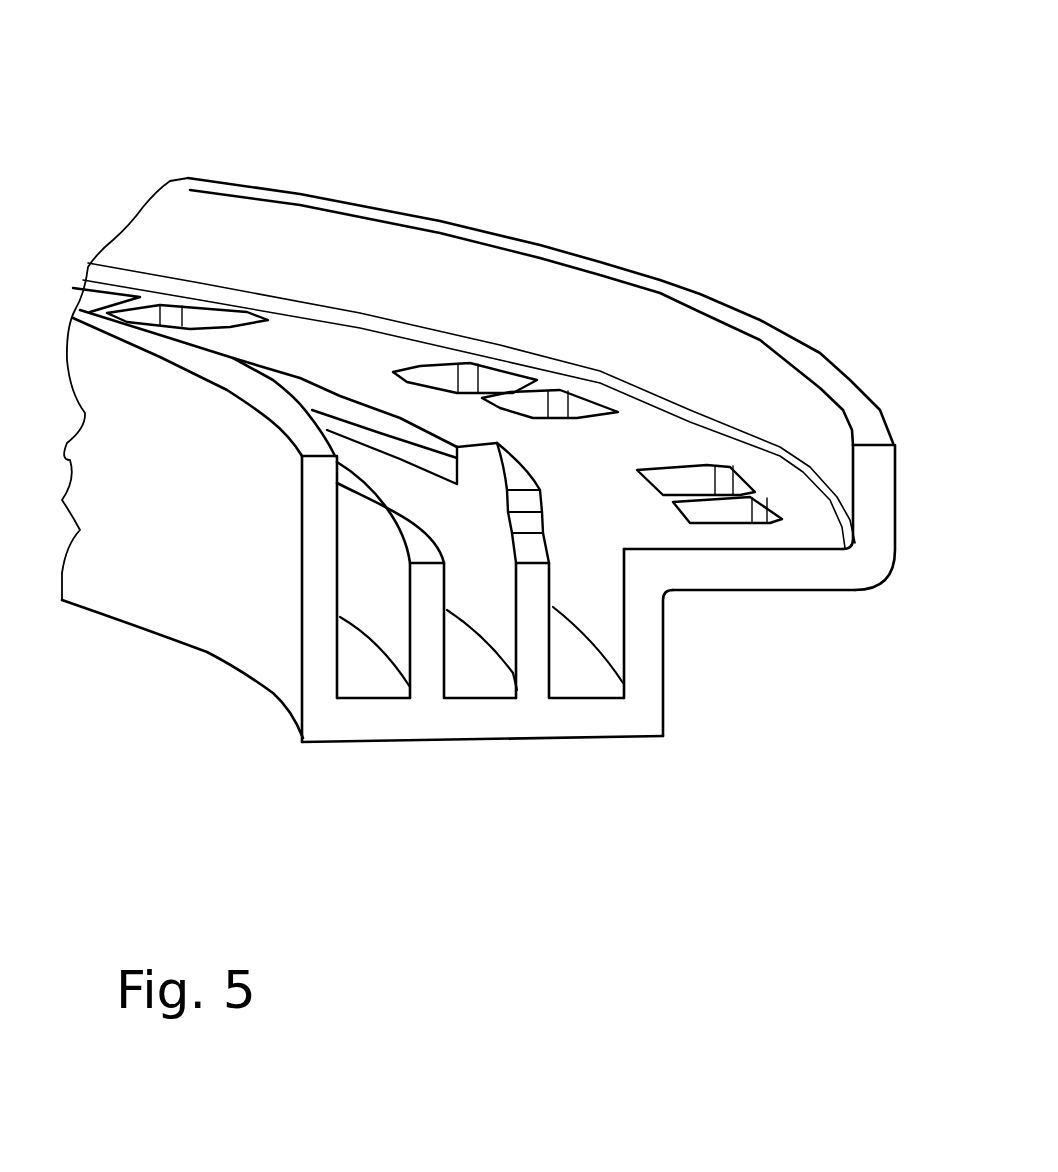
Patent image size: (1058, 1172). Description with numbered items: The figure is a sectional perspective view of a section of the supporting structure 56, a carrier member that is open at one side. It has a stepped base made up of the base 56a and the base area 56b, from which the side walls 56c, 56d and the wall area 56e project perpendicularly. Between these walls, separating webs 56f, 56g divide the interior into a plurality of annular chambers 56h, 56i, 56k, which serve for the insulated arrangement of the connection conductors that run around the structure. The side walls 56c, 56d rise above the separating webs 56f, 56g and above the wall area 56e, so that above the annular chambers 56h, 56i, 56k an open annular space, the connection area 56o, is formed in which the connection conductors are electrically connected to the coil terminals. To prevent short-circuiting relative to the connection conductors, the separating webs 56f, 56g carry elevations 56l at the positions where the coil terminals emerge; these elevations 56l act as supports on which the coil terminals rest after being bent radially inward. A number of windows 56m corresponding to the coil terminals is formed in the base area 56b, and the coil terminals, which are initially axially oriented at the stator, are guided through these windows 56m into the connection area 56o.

The supporting structure 56 is at (548, 205).
The connection area 56o is at (317, 245).
The windows 56m is at (553, 400).
The elevations 56l is at (512, 470).
The side wall 56d is at (898, 488).
The base area 56b is at (798, 592).
The wall area 56e is at (663, 653).
The base 56a is at (503, 717).
The side wall 56c is at (303, 613).
The annular chamber 56h is at (368, 590).
The separating web 56f is at (425, 657).
The annular chamber 56i is at (488, 577).
The separating web 56g is at (538, 643).
The annular chamber 56k is at (592, 583).